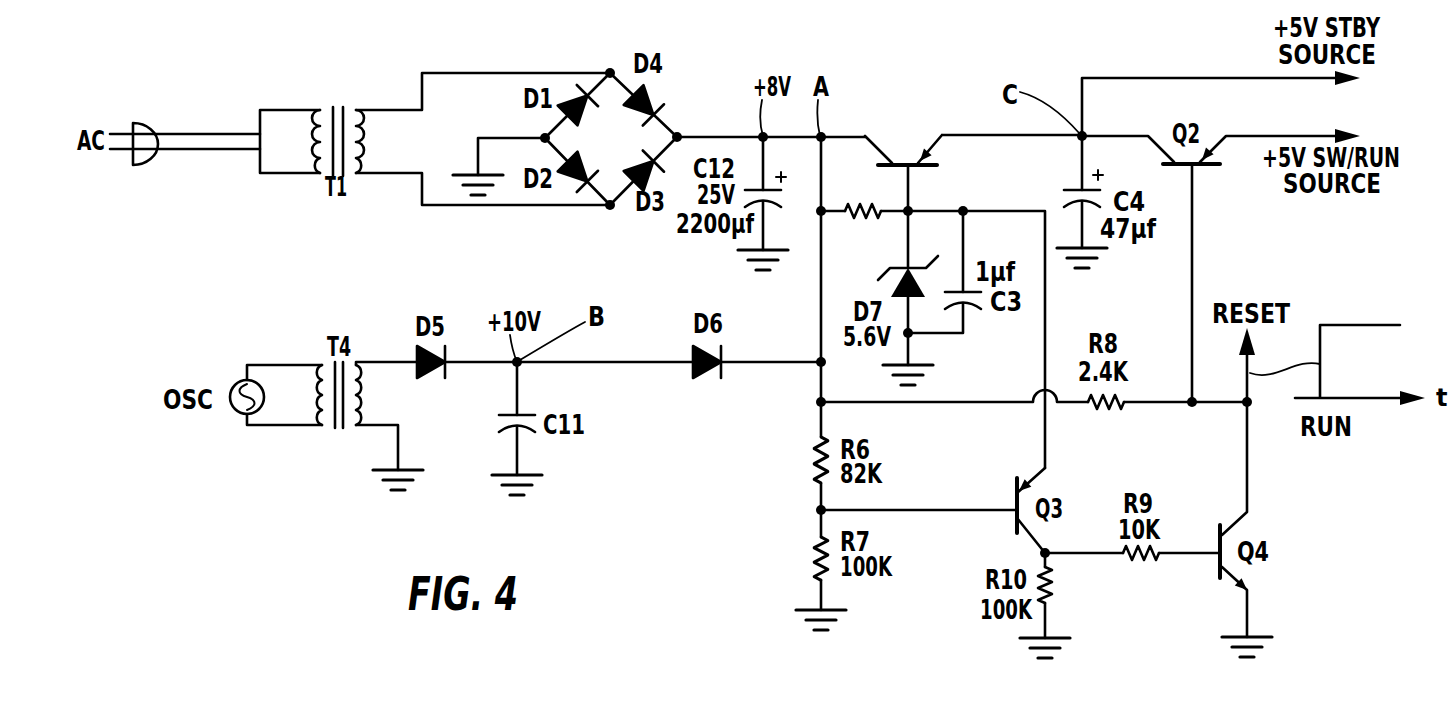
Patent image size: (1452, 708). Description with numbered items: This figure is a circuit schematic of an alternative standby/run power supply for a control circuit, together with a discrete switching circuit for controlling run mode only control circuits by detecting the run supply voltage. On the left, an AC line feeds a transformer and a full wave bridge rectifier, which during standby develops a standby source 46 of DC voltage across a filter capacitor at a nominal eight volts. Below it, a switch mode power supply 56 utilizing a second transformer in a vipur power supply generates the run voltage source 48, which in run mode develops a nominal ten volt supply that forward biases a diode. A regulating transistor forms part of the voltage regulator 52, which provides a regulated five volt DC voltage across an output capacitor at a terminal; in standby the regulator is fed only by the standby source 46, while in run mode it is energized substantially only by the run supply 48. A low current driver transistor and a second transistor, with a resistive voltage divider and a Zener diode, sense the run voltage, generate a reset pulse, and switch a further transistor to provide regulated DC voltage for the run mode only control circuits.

The standby source 46 is at (380, 104).
The voltage regulator 52 is at (912, 186).
The switch mode power supply 56 is at (288, 362).
The run voltage source 48 is at (450, 423).